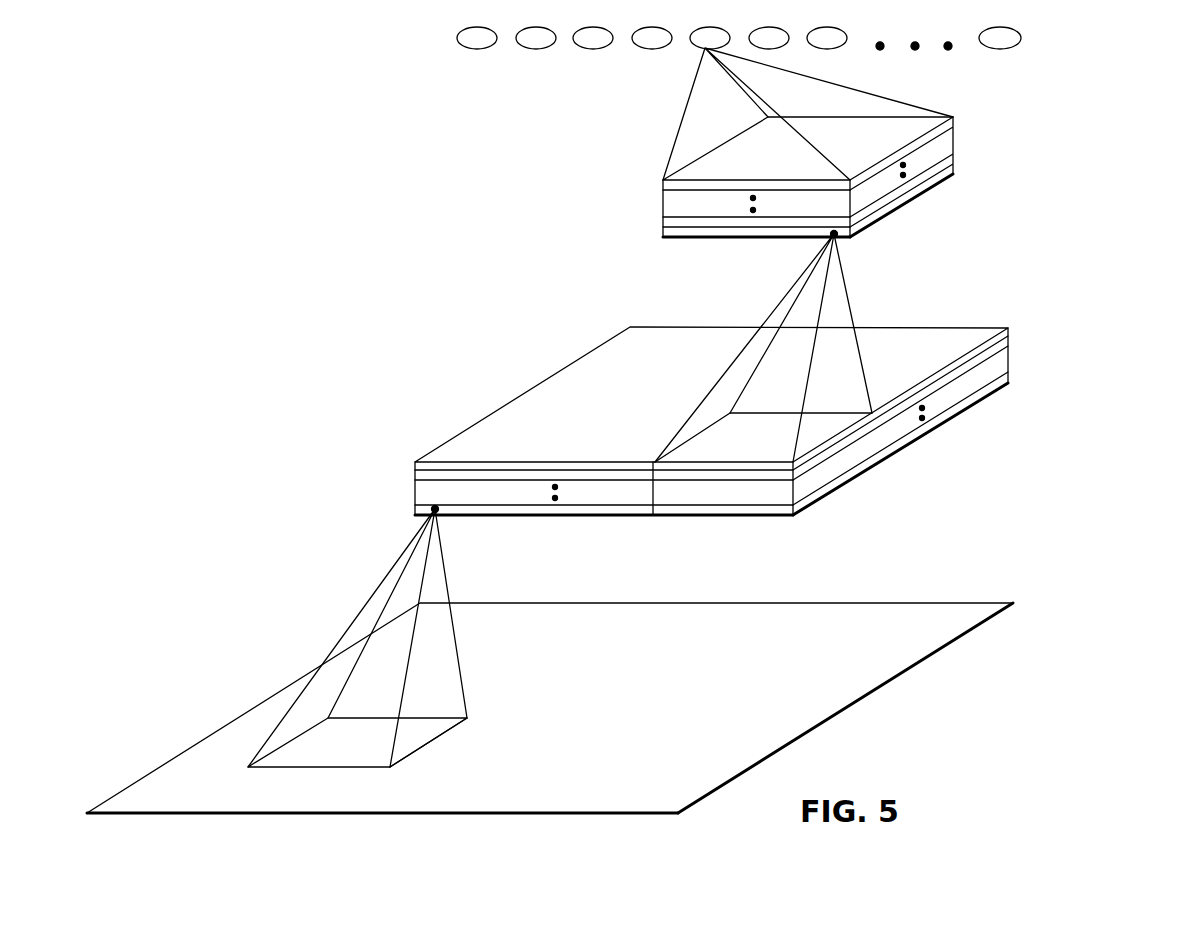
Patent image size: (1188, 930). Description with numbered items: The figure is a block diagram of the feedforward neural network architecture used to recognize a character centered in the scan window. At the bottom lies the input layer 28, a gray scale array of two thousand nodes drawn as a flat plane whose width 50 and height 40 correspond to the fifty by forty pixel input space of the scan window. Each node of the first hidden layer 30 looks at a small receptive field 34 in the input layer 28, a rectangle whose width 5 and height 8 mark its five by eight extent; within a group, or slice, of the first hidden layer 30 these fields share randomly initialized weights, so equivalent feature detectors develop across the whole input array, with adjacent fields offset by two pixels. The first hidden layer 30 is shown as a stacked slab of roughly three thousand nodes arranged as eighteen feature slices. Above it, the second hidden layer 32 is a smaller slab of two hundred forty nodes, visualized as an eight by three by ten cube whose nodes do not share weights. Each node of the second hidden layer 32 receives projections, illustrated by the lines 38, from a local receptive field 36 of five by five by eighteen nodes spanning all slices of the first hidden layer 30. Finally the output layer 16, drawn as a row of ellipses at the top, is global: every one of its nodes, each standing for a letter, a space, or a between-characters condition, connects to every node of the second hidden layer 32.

The output layer 16 is at (1015, 47).
The second hidden layer 32 is at (957, 142).
The lines 38 is at (803, 263).
The first hidden layer 30 is at (1008, 353).
The local receptive fields 36 is at (852, 428).
The receptive field width 5 is at (590, 594).
The receptive field height 8 is at (428, 744).
The input layer 28 is at (948, 622).
The input plane height 40 is at (845, 708).
The input plane width 50 is at (382, 827).
The receptive field 34 is at (432, 730).